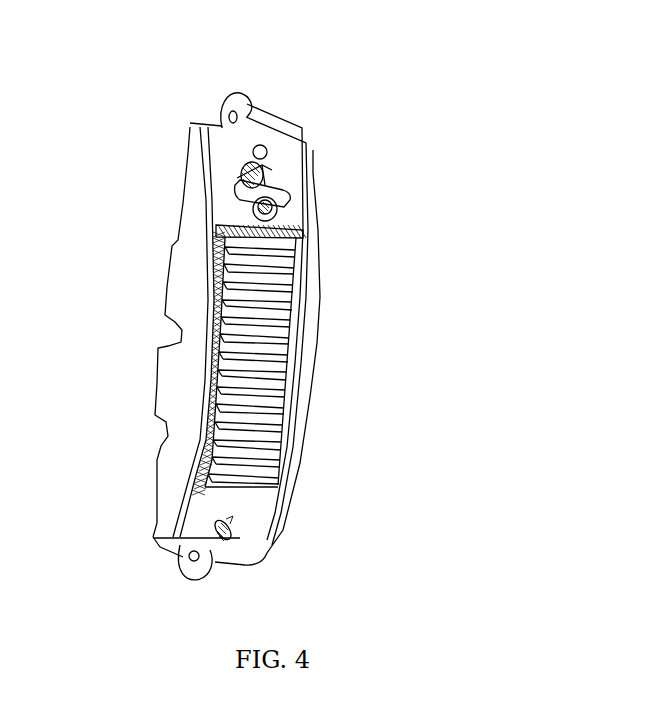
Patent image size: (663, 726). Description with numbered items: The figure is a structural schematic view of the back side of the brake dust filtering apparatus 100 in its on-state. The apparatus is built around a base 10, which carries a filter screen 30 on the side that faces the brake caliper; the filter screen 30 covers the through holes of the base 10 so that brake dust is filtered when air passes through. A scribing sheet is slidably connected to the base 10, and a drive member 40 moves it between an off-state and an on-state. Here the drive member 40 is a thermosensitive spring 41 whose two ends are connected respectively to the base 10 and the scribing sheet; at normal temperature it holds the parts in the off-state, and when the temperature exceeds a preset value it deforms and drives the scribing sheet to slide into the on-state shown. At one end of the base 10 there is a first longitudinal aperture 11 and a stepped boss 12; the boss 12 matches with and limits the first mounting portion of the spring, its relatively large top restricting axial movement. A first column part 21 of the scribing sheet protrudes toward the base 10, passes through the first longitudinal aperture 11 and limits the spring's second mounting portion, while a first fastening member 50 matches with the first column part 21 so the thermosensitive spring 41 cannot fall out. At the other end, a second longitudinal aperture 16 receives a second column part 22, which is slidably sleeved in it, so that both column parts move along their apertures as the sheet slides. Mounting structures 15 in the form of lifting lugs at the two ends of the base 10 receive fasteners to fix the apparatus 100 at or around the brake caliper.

The brake dust filtering apparatus 100 is at (136, 57).
The base 10 is at (320, 308).
The first longitudinal aperture 11 is at (262, 168).
The stepped boss 12 is at (262, 207).
The mounting structure 15 is at (247, 110).
The second longitudinal aperture 16 is at (232, 527).
The first column part 21 is at (255, 175).
The second column part 22 is at (218, 528).
The filter screen 30 is at (253, 407).
The drive member 40 is at (347, 165).
The thermosensitive spring 41 is at (285, 186).
The first fastening member 50 is at (265, 176).